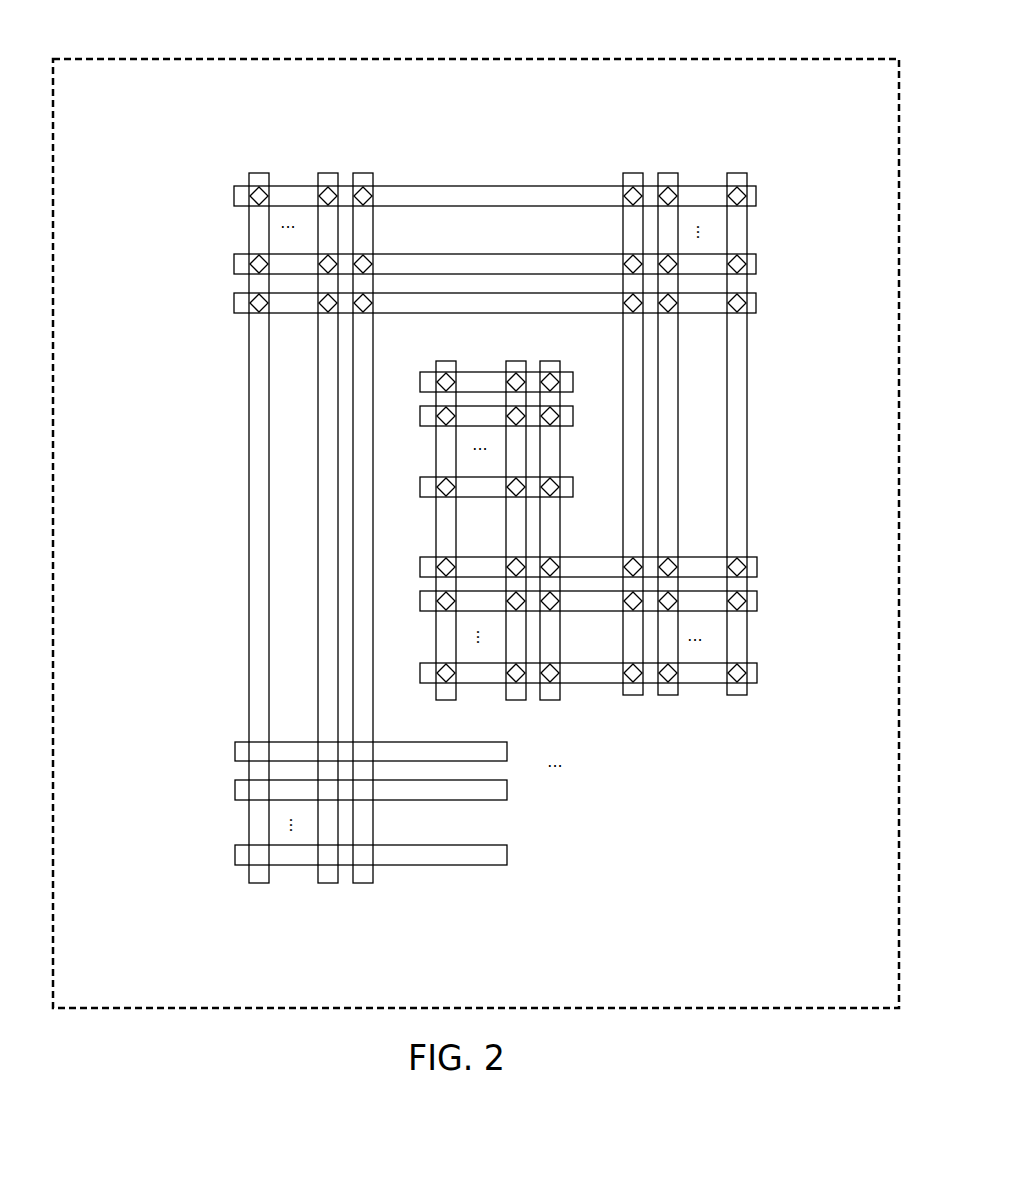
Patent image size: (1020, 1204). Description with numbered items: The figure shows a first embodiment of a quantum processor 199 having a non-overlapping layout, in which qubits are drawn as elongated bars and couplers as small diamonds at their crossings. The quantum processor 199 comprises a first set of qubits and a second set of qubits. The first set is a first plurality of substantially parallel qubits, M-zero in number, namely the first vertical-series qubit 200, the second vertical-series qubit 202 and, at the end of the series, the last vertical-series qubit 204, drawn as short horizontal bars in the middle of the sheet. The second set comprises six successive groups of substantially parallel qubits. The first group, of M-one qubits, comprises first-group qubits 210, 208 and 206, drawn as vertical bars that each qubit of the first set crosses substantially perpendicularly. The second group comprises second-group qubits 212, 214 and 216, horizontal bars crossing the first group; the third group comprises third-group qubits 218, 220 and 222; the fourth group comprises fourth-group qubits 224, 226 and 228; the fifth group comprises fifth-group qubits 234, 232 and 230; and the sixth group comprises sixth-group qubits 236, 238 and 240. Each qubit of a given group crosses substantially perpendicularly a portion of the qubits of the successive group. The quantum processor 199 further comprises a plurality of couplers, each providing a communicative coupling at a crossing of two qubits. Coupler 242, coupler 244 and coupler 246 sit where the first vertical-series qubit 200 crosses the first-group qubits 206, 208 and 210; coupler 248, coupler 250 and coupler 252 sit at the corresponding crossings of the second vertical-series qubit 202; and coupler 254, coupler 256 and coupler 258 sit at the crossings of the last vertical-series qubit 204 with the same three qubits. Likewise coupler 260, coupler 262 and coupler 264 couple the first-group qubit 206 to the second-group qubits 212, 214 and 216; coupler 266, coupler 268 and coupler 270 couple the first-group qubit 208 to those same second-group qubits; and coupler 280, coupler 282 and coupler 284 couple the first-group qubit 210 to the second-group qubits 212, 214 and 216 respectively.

The quantum processor 199 is at (770, 59).
The qubit V1 200 is at (420, 378).
The qubit V2 202 is at (420, 412).
The qubit VM0 204 is at (420, 483).
The qubit H1,M1 206 is at (447, 378).
The qubit H1,2 208 is at (515, 378).
The qubit H1,1 210 is at (550, 378).
The qubit H2,1 212 is at (757, 563).
The qubit H2,2 214 is at (757, 600).
The qubit H2,M2 216 is at (757, 670).
The qubit H3,1 218 is at (620, 697).
The qubit H3,2 220 is at (676, 697).
The qubit H3,M3 222 is at (750, 697).
The qubit H4,1 224 is at (757, 313).
The qubit H4,2 226 is at (757, 268).
The qubit H4,M4 228 is at (752, 186).
The qubit H5,M5 230 is at (249, 173).
The qubit H5,2 232 is at (322, 173).
The qubit H5,1 234 is at (371, 175).
The qubit H6,1 236 is at (235, 745).
The qubit H6,2 238 is at (235, 797).
The qubit H6,M6 240 is at (235, 870).
The coupler 242 is at (445, 380).
The coupler 244 is at (512, 380).
The coupler 246 is at (548, 380).
The coupler 248 is at (447, 420).
The coupler 250 is at (515, 417).
The coupler 252 is at (550, 418).
The coupler 254 is at (447, 490).
The coupler 256 is at (512, 488).
The coupler 258 is at (548, 490).
The coupler 260 is at (447, 567).
The coupler 262 is at (447, 601).
The coupler 264 is at (447, 673).
The coupler 266 is at (512, 575).
The coupler 268 is at (512, 608).
The coupler 270 is at (515, 680).
The coupler 280 is at (548, 575).
The coupler 282 is at (548, 608).
The coupler 284 is at (548, 680).